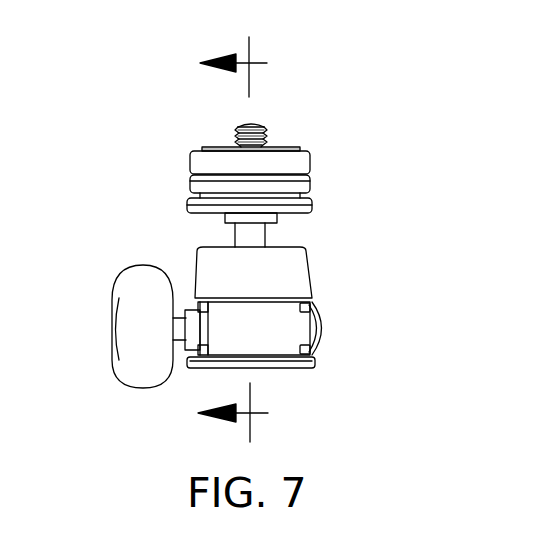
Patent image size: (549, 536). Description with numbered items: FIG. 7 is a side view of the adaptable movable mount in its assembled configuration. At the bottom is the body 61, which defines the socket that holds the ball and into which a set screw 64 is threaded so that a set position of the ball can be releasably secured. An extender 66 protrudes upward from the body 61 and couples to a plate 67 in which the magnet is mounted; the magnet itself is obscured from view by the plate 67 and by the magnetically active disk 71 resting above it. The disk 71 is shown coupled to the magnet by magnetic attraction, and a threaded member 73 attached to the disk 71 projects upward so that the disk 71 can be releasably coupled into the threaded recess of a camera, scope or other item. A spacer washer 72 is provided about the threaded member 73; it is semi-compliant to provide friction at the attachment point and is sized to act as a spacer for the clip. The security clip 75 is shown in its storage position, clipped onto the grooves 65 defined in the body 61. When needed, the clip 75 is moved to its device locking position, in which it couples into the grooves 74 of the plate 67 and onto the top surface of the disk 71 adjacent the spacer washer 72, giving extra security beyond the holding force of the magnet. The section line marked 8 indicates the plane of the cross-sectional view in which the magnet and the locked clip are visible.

The section line 8- 8 is at (237, 244).
The body 61 is at (302, 270).
The set screw 64 is at (128, 292).
The grooves 65 is at (197, 303).
The extender 66 is at (290, 225).
The plate 67 is at (190, 183).
The magnetically active disk 71 is at (190, 156).
The spacer washer 72 is at (286, 147).
The threaded member 73 is at (237, 124).
The grooves 74 is at (187, 199).
The security clip 75 is at (282, 333).